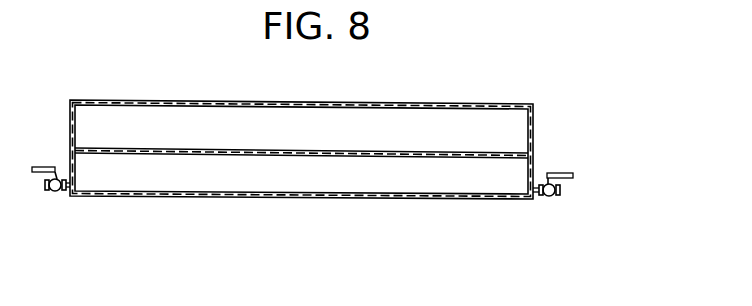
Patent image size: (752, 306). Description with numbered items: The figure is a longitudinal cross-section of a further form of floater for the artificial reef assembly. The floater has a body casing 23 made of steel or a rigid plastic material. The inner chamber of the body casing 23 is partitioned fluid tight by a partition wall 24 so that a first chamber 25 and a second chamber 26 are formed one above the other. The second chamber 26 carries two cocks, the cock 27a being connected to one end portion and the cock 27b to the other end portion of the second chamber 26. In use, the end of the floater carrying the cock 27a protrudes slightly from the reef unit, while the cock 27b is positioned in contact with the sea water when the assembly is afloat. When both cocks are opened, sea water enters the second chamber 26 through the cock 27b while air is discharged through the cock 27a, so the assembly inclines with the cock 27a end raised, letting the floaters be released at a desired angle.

The body casing 23 is at (402, 104).
The partition wall 24 is at (505, 153).
The first chamber 25 is at (215, 126).
The second chamber 26 is at (247, 181).
The cock 27a is at (57, 194).
The cock 27b is at (560, 197).